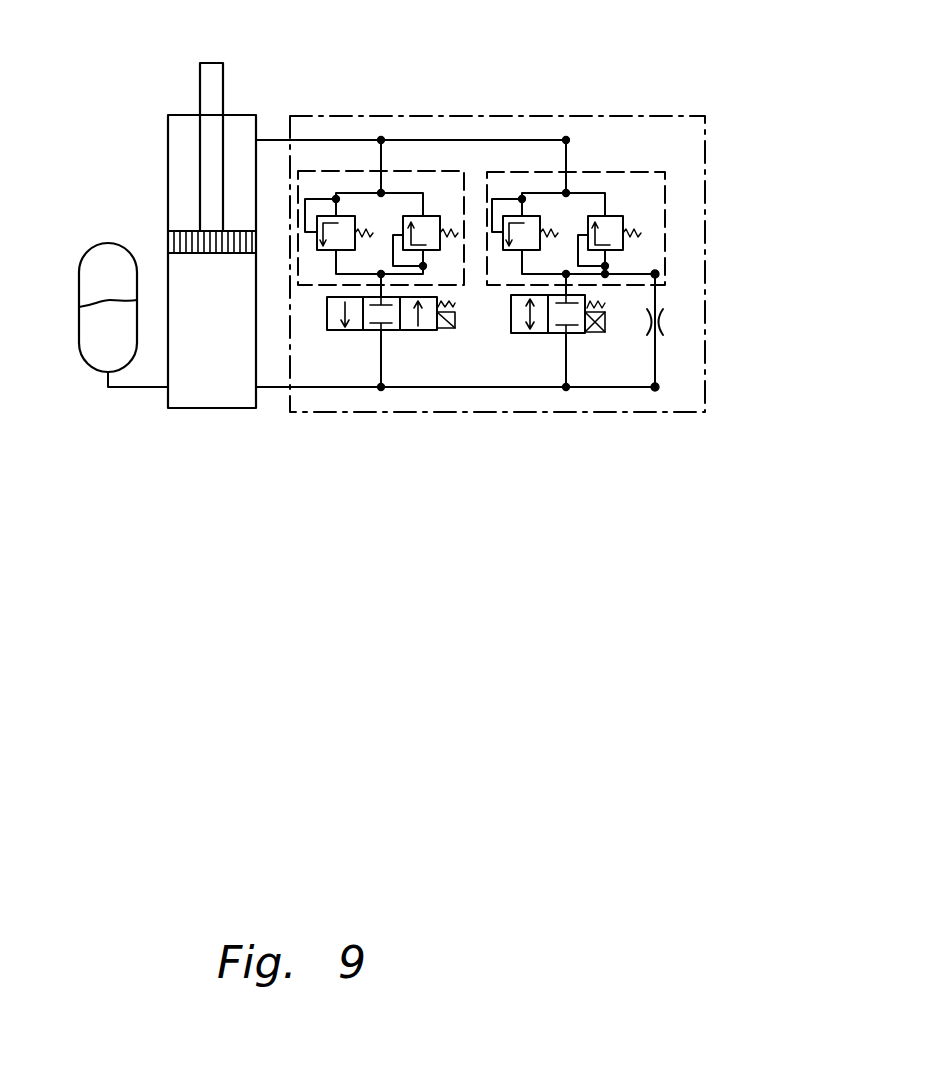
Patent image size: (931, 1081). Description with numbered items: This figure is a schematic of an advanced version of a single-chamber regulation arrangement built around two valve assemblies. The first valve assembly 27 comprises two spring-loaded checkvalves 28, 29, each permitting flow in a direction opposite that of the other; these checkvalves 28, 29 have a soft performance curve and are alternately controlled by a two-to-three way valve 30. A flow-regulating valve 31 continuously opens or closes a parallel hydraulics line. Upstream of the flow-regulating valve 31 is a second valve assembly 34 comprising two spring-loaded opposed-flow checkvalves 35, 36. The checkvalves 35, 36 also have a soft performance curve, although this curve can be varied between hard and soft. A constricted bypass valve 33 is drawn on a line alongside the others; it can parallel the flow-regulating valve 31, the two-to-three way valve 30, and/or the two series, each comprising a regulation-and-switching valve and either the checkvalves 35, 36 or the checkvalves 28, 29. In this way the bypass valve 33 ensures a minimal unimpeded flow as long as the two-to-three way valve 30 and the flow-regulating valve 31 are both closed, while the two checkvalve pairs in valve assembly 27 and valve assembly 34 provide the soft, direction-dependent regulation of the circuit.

The valve assembly 27 is at (465, 171).
The spring-loaded checkvalve 28 is at (337, 216).
The spring-loaded checkvalve 29 is at (432, 216).
The two-to-three way valve 30 is at (365, 332).
The flow-regulating valve 31 is at (548, 333).
The bypass valve 33 is at (662, 322).
The valve assembly 34 is at (662, 172).
The spring-loaded opposed-flow checkvalve 35 is at (522, 216).
The spring-loaded opposed-flow checkvalve 36 is at (624, 216).